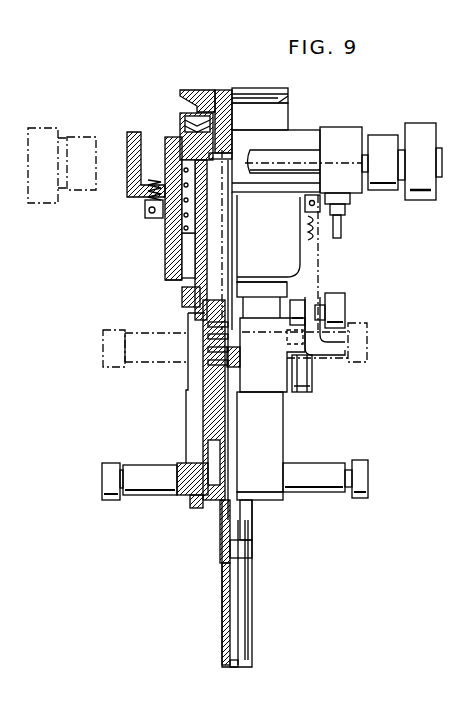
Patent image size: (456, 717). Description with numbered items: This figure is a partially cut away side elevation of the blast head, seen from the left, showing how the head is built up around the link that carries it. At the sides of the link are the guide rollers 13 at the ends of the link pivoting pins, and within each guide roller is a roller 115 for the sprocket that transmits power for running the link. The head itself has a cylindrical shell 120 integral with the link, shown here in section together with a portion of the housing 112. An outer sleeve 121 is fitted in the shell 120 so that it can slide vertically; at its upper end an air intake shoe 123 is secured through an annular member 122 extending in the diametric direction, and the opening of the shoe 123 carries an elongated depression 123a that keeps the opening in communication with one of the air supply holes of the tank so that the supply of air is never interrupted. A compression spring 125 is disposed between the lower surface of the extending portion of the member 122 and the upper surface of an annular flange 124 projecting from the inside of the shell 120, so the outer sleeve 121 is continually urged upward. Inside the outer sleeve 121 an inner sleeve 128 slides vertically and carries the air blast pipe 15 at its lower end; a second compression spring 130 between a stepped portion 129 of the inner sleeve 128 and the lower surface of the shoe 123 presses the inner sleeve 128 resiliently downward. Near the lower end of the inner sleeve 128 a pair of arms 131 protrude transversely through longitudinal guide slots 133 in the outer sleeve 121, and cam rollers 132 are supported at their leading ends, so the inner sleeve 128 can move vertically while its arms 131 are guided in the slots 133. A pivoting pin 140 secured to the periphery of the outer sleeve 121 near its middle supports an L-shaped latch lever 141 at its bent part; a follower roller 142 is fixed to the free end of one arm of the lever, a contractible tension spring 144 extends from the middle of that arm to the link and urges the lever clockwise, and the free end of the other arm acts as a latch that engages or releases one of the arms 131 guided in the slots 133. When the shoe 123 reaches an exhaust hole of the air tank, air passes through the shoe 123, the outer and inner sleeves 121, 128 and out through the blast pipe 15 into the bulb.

The guide roller 13 is at (37, 128).
The roller 115 is at (87, 137).
The annular member 122 is at (179, 138).
The air intake shoe 123 is at (196, 94).
The depression 123a is at (221, 90).
The annular flange 124 is at (182, 233).
The cylindrical shell 120 is at (176, 250).
The outer sleeve 121 is at (184, 297).
The housing 112 is at (180, 317).
The stepped portion 129 is at (207, 374).
The guide slot 133 is at (203, 421).
The cam roller 132 is at (108, 463).
The arm 131 is at (147, 496).
The compression spring 125 is at (198, 200).
The compression spring 130 is at (236, 251).
The contractible tension spring 144 is at (319, 253).
The follower roller 142 is at (335, 300).
The L-shaped latch lever 141 is at (322, 342).
The pivoting pin 140 is at (310, 378).
The inner sleeve 128 is at (228, 352).
The air blast pipe 15 is at (251, 606).